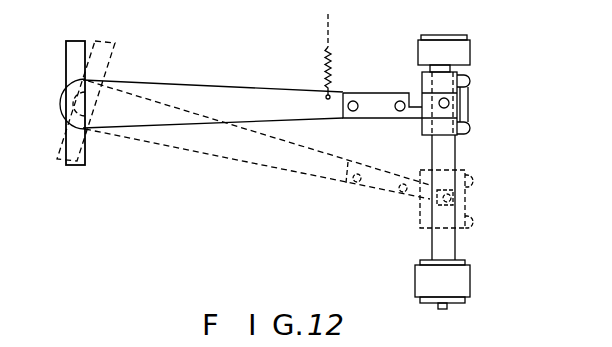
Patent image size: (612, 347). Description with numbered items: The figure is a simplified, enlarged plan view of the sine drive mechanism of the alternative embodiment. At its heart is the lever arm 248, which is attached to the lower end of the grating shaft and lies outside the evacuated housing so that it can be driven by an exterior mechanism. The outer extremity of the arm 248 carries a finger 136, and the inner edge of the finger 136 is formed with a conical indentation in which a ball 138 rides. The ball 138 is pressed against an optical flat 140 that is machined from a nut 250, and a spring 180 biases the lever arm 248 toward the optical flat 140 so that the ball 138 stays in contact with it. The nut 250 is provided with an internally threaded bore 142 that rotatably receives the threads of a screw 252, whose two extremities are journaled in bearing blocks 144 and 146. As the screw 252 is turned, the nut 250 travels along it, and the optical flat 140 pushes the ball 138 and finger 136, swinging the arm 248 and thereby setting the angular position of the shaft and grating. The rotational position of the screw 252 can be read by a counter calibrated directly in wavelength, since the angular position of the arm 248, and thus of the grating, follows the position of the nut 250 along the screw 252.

The arm 248 is at (278, 75).
The spring 180 is at (333, 56).
The finger 136 is at (403, 118).
The optical flat 140 is at (421, 90).
The nut 250 is at (469, 92).
The ball 138 is at (450, 103).
The bearing block 144 is at (468, 50).
The screw 252 is at (445, 159).
The bearing block 146 is at (461, 282).
The internally threaded bore 142 is at (423, 134).